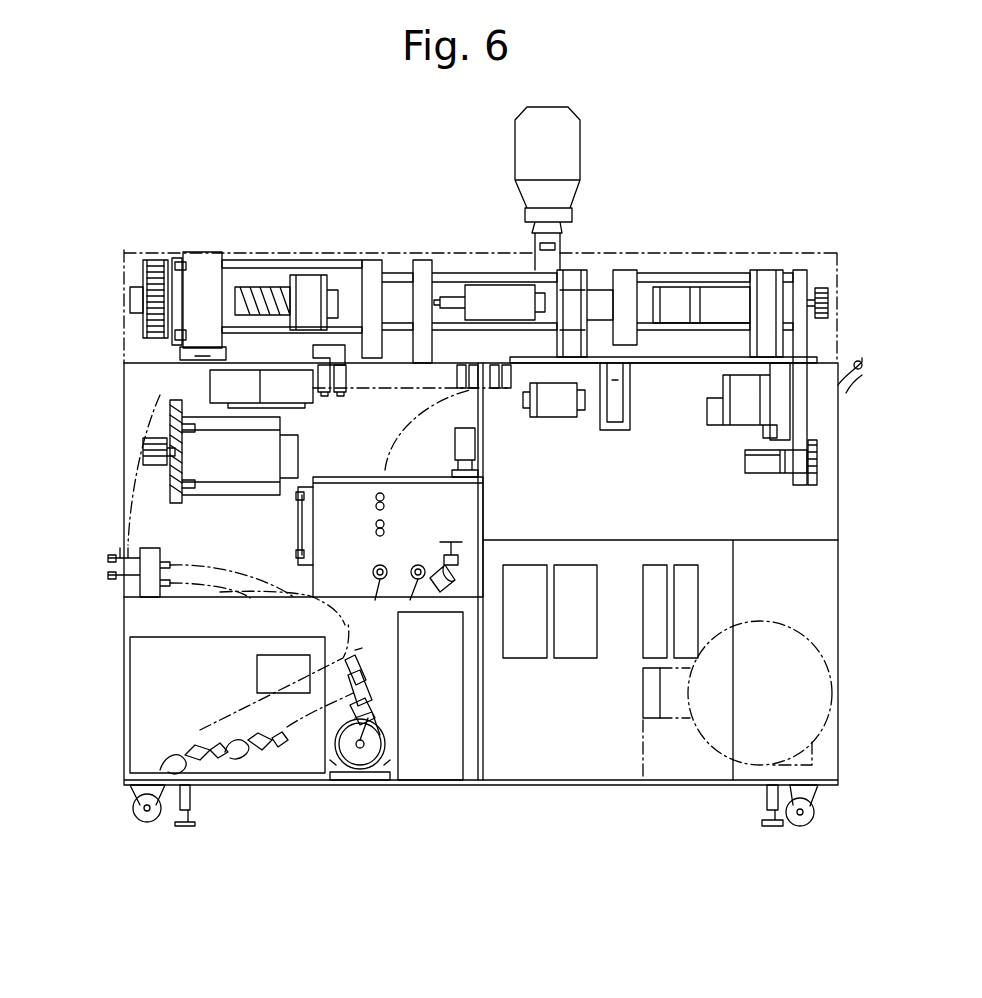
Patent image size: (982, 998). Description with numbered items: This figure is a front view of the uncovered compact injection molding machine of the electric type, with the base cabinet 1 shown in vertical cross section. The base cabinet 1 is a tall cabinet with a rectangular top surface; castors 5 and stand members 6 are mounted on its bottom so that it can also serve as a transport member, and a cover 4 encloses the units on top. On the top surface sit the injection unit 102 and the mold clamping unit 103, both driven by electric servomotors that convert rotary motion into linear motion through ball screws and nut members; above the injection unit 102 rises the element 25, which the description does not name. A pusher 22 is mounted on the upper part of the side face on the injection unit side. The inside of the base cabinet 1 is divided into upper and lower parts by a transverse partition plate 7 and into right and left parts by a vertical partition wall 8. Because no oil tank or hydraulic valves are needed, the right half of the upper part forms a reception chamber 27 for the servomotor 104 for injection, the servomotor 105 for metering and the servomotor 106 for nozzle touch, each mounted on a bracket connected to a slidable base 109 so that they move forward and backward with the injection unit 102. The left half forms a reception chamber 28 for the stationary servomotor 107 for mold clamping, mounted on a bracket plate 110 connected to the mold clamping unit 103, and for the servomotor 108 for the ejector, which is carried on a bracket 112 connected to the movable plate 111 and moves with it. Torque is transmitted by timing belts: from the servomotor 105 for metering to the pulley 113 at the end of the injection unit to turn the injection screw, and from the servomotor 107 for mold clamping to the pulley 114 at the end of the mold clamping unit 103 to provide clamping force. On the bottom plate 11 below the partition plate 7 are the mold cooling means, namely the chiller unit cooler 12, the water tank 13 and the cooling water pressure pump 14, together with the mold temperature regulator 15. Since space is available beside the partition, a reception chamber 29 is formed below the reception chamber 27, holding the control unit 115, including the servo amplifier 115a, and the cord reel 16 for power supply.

The base cabinet 1 is at (118, 380).
The cover 4 is at (132, 268).
The castors 5 is at (145, 820).
The stand members 6 is at (188, 823).
The partition plate 7 is at (563, 540).
The vertical partition wall 8 is at (500, 733).
The bottom plate 11 is at (557, 780).
The chiller unit cooler 12 is at (165, 720).
The water tank 13 is at (410, 500).
The cooling water pressure pump 14 is at (355, 755).
The mold temperature regulator 15 is at (440, 742).
The cord reel 16 is at (795, 682).
The pusher 22 is at (863, 361).
The hopper 25 is at (567, 138).
The reception chamber 27 is at (620, 506).
The reception chamber 28 is at (170, 534).
The reception chamber 29 is at (797, 605).
The injection unit 102 is at (712, 277).
The mold clamping unit 103 is at (403, 258).
The servomotor for injection 104 is at (740, 413).
The servomotor for metering 105 is at (778, 463).
The servomotor for nozzle touch 106 is at (587, 412).
The servomotor for mold clamping 107 is at (223, 458).
The servomotor for the ejector 108 is at (288, 403).
The base 109 is at (678, 353).
The bracket plate 110 is at (215, 388).
The movable plate 111 is at (374, 262).
The bracket 112 is at (330, 368).
The pulley 113 is at (826, 288).
The pulley 114 is at (153, 272).
The control unit 115 is at (620, 750).
The servo amplifier 115a is at (650, 648).